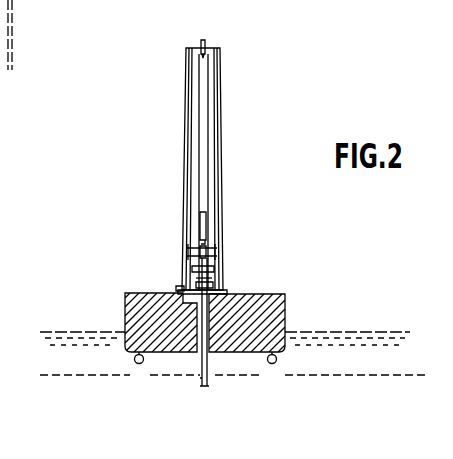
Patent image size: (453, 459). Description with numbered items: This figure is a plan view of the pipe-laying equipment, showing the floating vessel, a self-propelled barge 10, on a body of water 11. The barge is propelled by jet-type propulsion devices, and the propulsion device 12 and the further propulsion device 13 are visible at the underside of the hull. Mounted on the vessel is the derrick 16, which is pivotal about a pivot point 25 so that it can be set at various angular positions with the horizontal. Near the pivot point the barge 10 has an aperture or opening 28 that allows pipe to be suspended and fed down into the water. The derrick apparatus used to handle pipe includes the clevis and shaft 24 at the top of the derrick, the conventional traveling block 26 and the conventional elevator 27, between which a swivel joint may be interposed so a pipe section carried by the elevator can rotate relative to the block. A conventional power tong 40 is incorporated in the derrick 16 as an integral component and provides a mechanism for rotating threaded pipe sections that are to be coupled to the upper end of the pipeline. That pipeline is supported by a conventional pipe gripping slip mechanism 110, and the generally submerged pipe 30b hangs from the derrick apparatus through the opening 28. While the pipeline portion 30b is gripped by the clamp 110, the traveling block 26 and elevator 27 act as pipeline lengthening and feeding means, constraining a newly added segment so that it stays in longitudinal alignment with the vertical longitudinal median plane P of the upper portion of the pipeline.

The self-propelled barge 10 is at (286, 300).
The body of water 11 is at (70, 344).
The jet-type propulsion device 12 is at (278, 361).
The jet-type propulsion device 13 is at (133, 361).
The derrick 16 is at (226, 106).
The clevis and shaft 24 is at (206, 42).
The pivot point 25 is at (180, 289).
The traveling block 26 is at (207, 223).
The elevator 27 is at (207, 250).
The aperture or opening 28 is at (209, 352).
The pipe 30b is at (200, 378).
The power tong 40 is at (212, 268).
The vertical longitudinal median plane P is at (208, 278).
The pipe gripping slip mechanism 110 is at (212, 285).